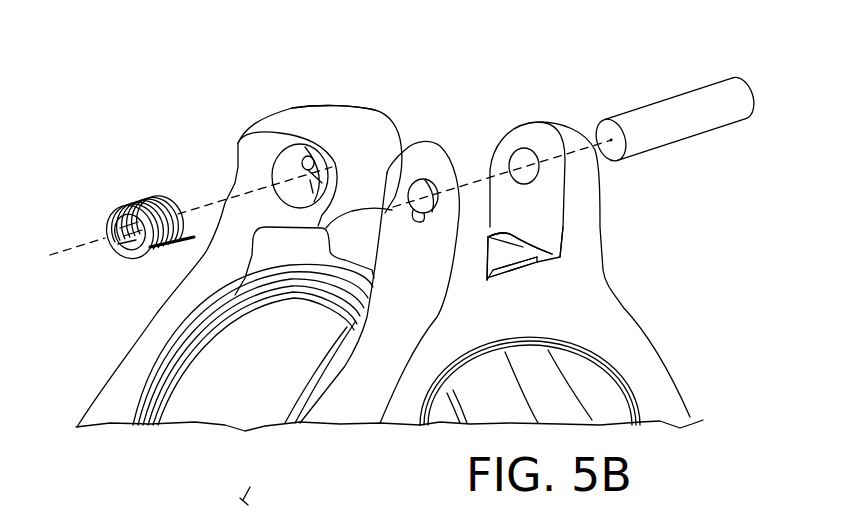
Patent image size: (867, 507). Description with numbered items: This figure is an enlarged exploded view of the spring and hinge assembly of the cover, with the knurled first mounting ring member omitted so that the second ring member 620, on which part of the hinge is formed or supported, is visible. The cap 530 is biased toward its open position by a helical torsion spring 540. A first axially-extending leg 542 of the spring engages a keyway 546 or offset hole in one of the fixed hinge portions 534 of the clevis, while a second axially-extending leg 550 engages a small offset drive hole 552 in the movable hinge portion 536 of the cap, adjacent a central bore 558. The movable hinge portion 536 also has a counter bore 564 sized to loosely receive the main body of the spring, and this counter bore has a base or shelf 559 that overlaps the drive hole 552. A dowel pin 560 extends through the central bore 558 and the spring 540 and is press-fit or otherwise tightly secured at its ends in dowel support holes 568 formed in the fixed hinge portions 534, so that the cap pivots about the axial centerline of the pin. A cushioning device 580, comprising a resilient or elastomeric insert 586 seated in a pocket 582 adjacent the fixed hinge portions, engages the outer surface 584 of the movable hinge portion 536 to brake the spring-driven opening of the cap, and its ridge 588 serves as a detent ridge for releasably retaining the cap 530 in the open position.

The cap 530 is at (160, 326).
The fixed hinge portions 534 is at (445, 142).
The movable hinge portion 536 is at (372, 78).
The spring 540 is at (118, 184).
The first axially-extending leg 542 is at (125, 236).
The keyway 546 is at (413, 224).
The second axially-extending leg 550 is at (182, 232).
The drive hole 552 is at (300, 153).
The central bore 558 is at (314, 157).
The shelf 559 is at (313, 166).
The dowel pin 560 is at (677, 97).
The counter bore 564 is at (275, 159).
The dowel support holes 568 is at (418, 180).
The cushioning device 580 is at (523, 247).
The pocket 582 is at (546, 262).
The outer surface 584 is at (352, 112).
The insert 586 is at (523, 247).
The ridge 588 is at (514, 221).
The second ring member 620 is at (643, 347).